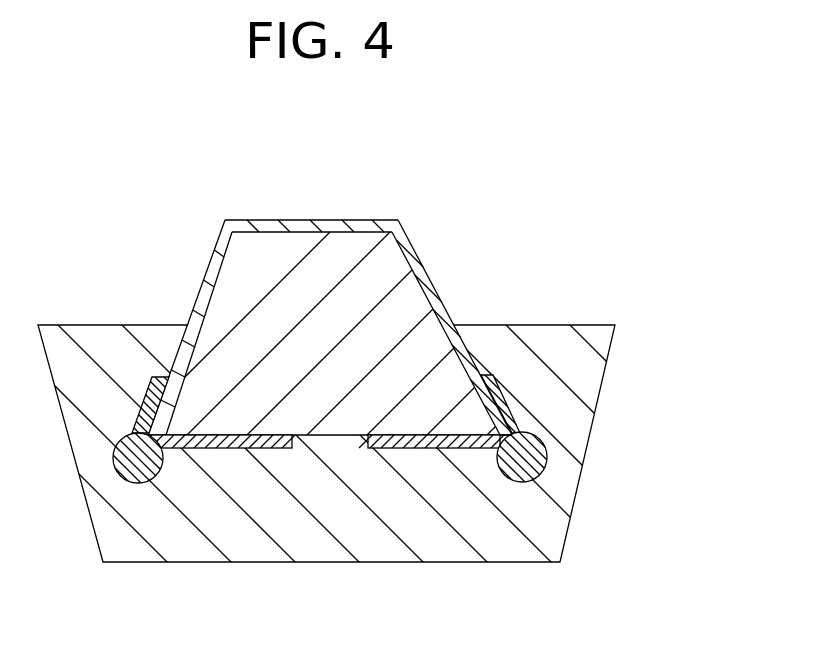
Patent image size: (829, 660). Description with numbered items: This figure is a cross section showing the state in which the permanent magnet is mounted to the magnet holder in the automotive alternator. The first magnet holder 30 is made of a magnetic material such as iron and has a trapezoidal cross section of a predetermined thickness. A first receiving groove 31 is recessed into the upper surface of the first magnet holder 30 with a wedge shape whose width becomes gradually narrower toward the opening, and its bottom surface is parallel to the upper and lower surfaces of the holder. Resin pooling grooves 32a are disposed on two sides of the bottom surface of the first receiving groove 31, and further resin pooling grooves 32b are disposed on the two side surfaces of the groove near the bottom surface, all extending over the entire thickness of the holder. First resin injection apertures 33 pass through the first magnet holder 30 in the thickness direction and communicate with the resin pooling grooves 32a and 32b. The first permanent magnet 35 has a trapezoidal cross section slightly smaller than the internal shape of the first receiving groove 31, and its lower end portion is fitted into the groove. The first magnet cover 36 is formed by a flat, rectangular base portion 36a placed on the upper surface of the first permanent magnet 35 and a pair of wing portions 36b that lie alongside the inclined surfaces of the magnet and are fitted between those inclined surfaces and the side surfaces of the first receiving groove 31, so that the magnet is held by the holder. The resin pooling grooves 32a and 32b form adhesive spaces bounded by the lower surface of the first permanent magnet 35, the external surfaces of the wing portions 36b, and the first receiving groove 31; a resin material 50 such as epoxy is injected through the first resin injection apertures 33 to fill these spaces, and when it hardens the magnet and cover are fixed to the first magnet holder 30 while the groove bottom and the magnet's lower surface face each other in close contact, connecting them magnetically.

The first magnet holder 30 is at (614, 318).
The first receiving groove 31 is at (342, 436).
The resin pooling grooves 32a is at (417, 450).
The resin pooling grooves 32b is at (505, 392).
The first resin injection apertures 33 is at (543, 461).
The first permanent magnet 35 is at (380, 276).
The first magnet cover 36 is at (388, 300).
The base portion 36a is at (268, 229).
The wing portions 36b is at (195, 310).
The resin material 50 is at (543, 445).